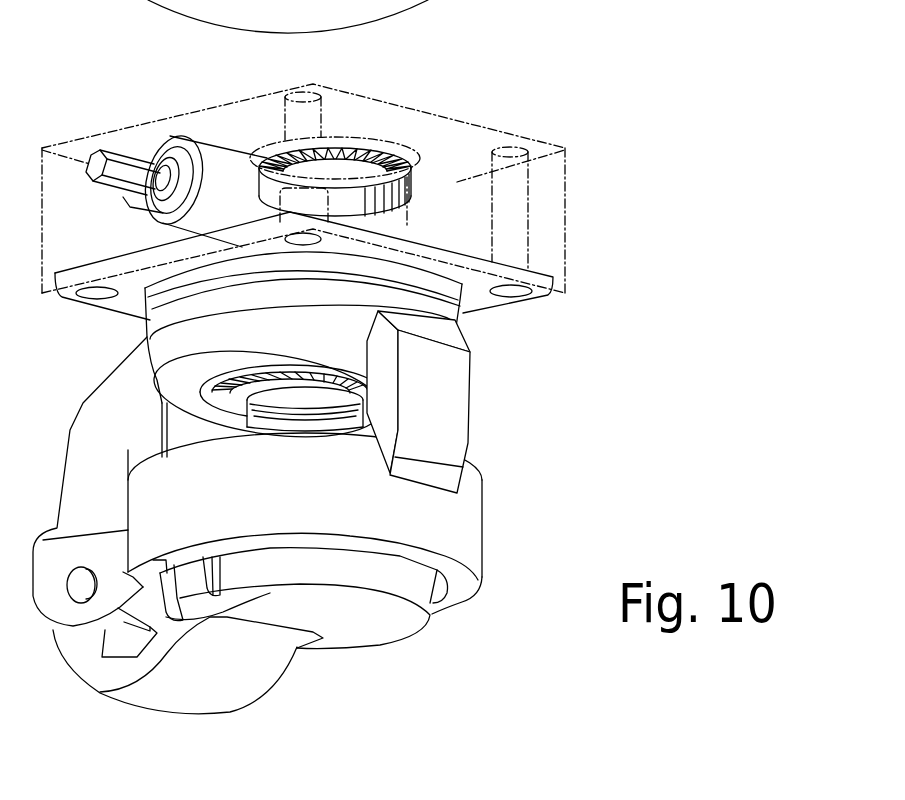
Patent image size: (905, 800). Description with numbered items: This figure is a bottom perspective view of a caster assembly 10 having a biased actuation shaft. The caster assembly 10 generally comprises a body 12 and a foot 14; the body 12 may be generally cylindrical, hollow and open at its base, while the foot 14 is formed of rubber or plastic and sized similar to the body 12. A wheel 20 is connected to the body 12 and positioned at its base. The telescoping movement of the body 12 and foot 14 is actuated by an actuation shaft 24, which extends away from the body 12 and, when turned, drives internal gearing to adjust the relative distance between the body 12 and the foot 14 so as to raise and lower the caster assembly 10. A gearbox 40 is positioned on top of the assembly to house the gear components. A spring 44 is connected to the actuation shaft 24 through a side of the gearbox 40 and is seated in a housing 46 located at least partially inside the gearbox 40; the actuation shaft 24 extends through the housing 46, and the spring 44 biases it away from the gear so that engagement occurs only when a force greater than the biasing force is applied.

The caster assembly 10 is at (468, 60).
The body 12 is at (463, 518).
The foot 14 is at (427, 592).
The wheel 20 is at (232, 687).
The actuation shaft 24 is at (98, 162).
The gearbox 40 is at (568, 190).
The spring 44 is at (171, 153).
The housing 46 is at (213, 147).